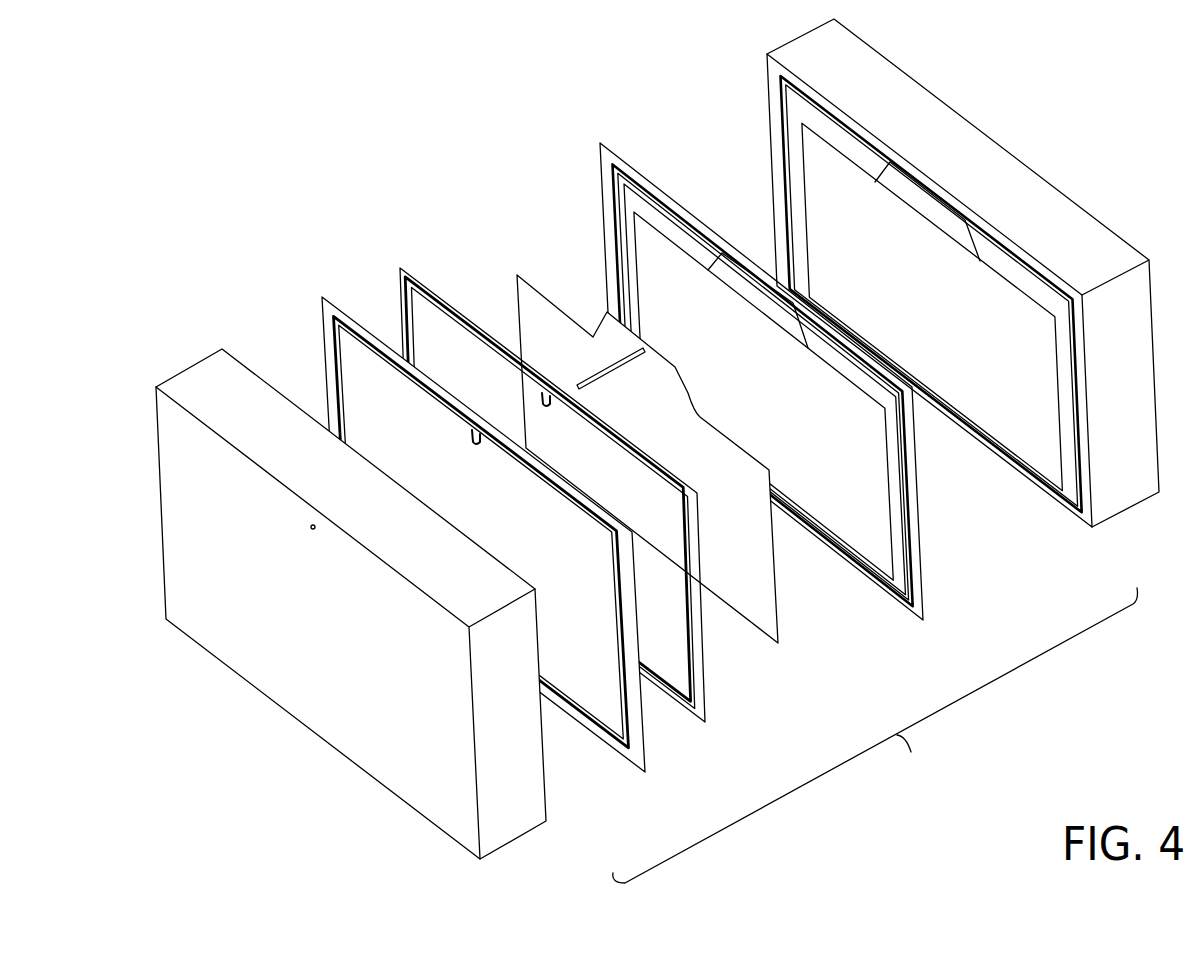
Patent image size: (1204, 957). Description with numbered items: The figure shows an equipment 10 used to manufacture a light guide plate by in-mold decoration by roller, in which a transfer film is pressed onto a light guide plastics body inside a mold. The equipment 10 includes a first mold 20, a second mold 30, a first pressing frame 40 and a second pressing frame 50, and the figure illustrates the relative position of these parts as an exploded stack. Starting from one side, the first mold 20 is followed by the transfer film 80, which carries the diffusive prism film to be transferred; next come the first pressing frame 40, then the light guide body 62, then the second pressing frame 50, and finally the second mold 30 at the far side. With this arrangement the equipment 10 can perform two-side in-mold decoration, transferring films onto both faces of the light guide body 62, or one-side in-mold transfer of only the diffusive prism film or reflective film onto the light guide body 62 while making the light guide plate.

The equipment 10 is at (875, 735).
The first mold 20 is at (510, 819).
The second mold 30 is at (1113, 490).
The first pressing frame 40 is at (707, 700).
The second pressing frame 50 is at (923, 580).
The light guide body 62 is at (532, 303).
The transfer film 80 is at (322, 300).